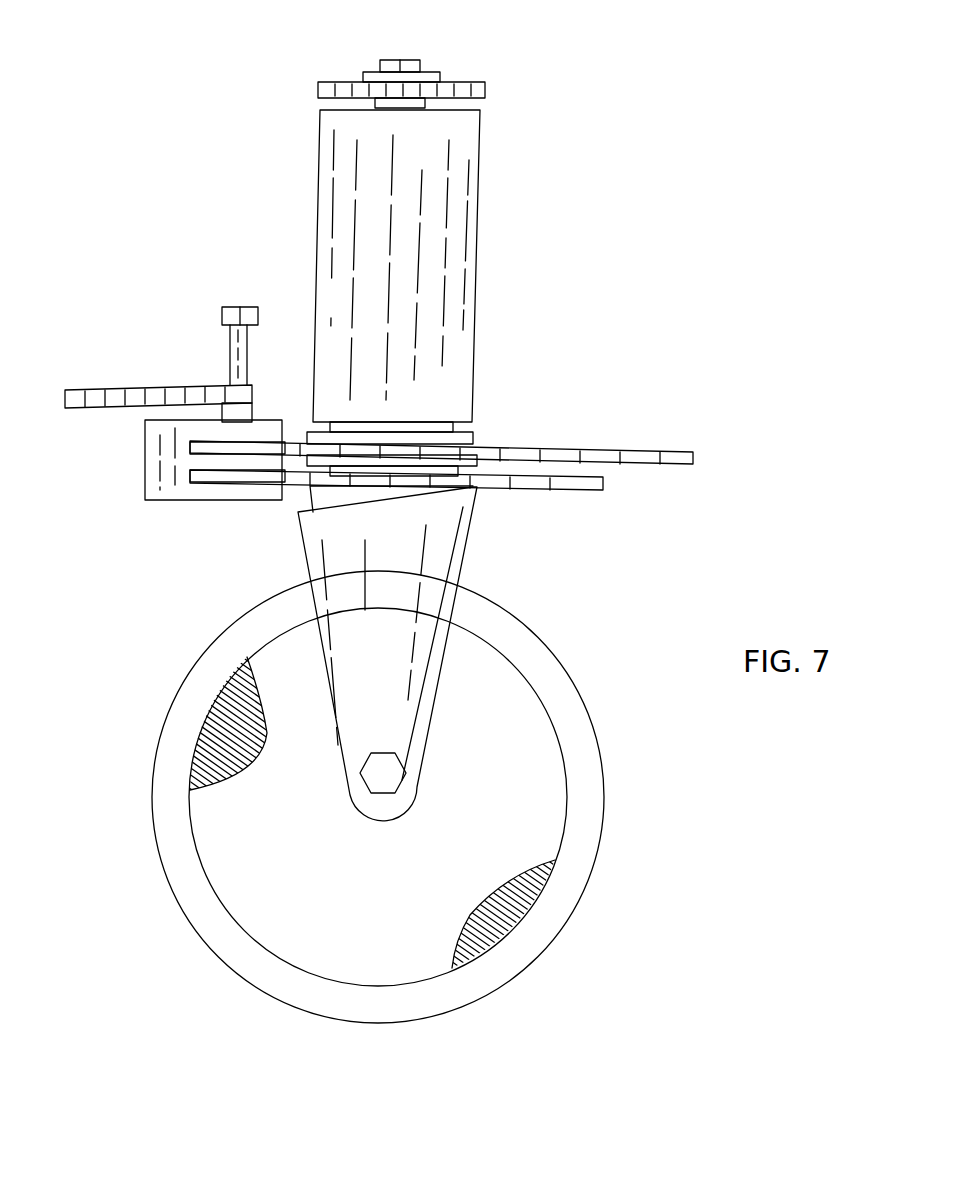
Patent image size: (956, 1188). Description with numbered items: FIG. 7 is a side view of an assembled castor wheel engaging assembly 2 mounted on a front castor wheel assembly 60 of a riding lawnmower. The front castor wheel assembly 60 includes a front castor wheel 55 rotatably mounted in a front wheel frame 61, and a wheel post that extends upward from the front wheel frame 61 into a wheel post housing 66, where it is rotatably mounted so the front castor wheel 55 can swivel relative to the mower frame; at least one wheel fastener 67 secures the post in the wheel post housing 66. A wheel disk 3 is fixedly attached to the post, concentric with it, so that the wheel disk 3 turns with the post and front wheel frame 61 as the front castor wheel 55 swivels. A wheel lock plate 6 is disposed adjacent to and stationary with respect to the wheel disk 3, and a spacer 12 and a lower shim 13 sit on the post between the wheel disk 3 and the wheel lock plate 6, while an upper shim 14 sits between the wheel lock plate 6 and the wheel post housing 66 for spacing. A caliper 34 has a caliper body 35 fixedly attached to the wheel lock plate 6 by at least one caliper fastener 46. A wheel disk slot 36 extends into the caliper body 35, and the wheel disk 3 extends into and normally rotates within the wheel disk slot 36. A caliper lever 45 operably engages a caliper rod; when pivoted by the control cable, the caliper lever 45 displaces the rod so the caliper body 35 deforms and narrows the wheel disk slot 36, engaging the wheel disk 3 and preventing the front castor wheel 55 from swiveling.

The castor wheel engaging assembly 2 is at (648, 385).
The wheel disk 3 is at (590, 493).
The wheel lock plate 6 is at (645, 448).
The spacer 12 is at (480, 478).
The lower shim 13 is at (468, 465).
The upper shim 14 is at (473, 437).
The caliper 34 is at (93, 362).
The caliper body 35 is at (138, 475).
The wheel disk slot 36 is at (207, 480).
The caliper lever 45 is at (183, 390).
The caliper fastener 46 is at (236, 303).
The front castor wheel 55 is at (533, 798).
The front castor wheel assembly 60 is at (236, 189).
The front wheel frame 61 is at (433, 572).
The wheel post housing 66 is at (452, 235).
The wheel fastener 67 is at (420, 60).